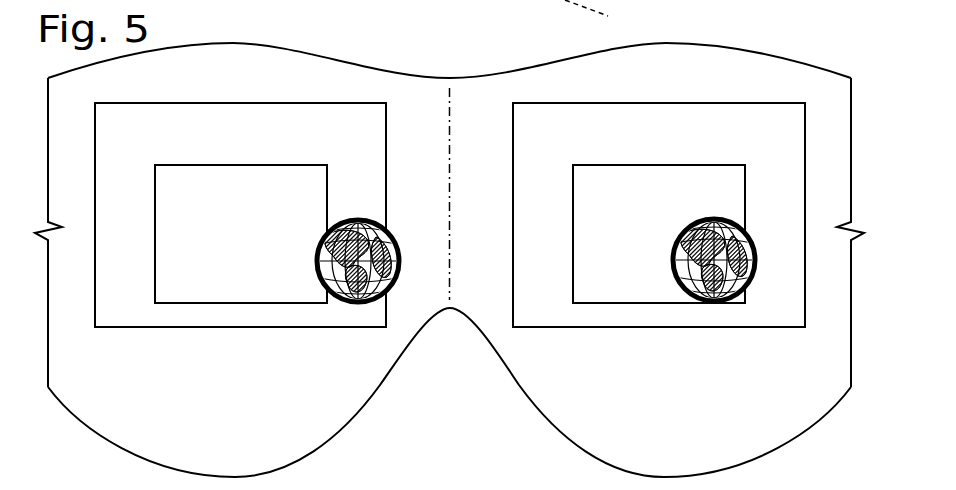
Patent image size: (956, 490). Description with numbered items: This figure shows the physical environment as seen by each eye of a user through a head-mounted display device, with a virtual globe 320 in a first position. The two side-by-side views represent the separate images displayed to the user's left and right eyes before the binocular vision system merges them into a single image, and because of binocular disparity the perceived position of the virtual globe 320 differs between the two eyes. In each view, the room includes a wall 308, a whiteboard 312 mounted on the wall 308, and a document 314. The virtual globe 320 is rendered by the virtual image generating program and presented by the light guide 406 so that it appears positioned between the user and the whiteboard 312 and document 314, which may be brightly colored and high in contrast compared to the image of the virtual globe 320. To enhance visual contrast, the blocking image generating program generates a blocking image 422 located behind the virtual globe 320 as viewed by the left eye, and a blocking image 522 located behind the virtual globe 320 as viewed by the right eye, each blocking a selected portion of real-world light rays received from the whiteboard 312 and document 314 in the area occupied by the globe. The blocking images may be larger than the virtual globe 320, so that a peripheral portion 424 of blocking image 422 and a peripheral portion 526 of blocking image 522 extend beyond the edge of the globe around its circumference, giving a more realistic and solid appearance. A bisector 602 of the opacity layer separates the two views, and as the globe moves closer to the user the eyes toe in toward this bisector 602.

The wall 308 is at (449, 260).
The whiteboard 312 is at (188, 103).
The document 314 is at (256, 200).
The virtual globe 320 is at (519, 248).
The light guide 406 is at (497, 345).
The blocking image 422 is at (379, 249).
The peripheral portion 424 is at (397, 243).
The blocking image 522 is at (736, 248).
The peripheral portion 526 is at (753, 243).
The bisector 602 is at (452, 135).